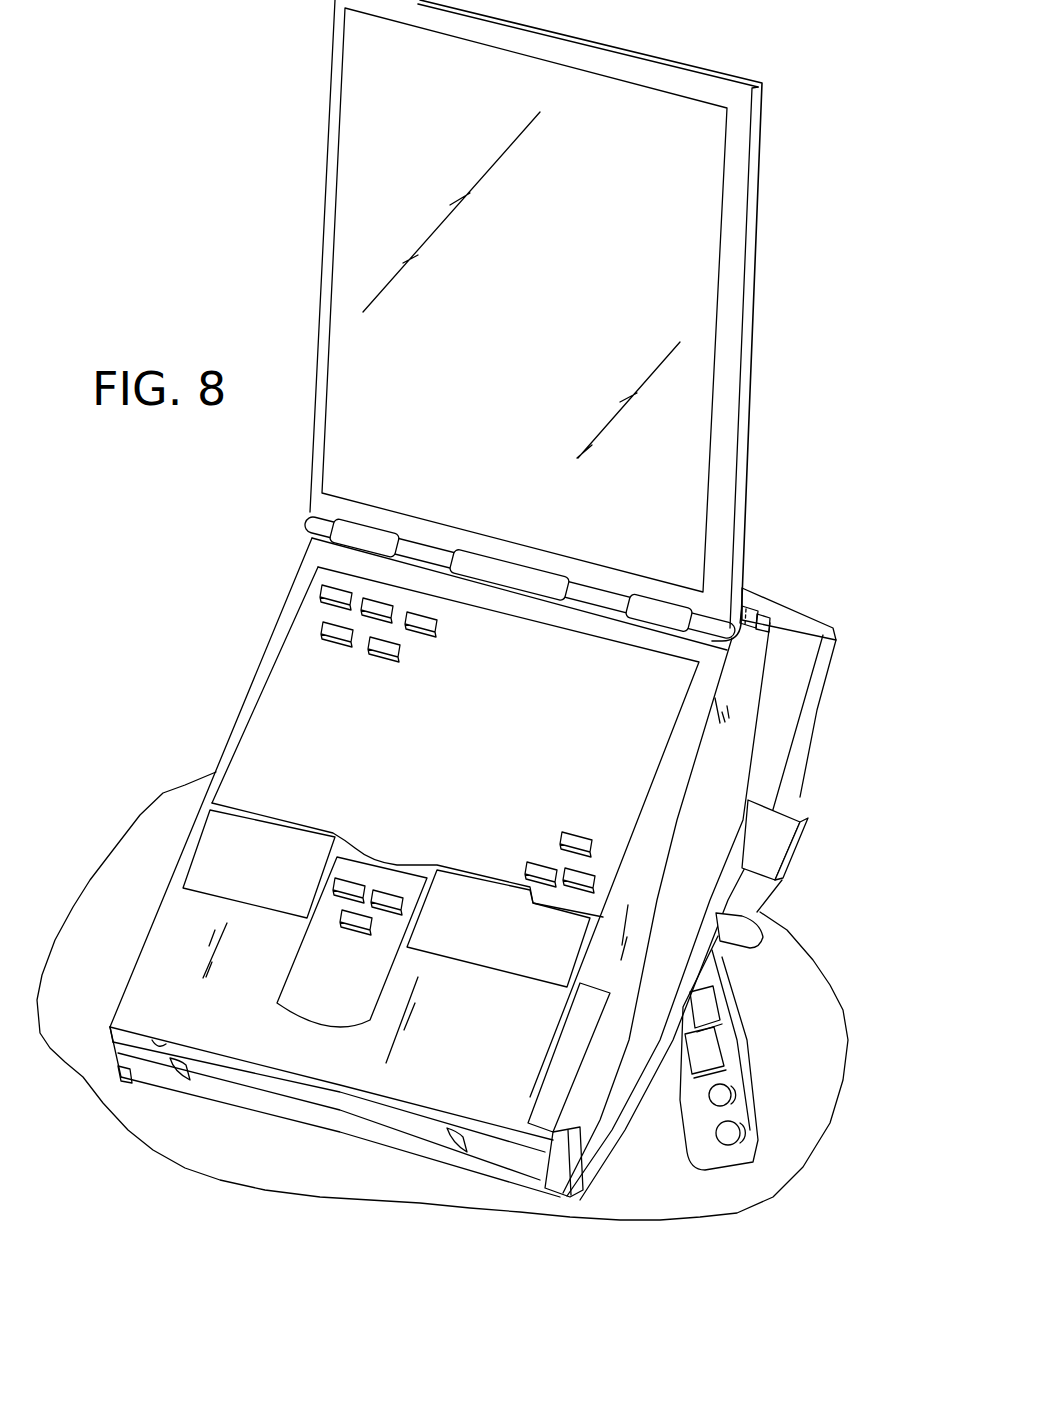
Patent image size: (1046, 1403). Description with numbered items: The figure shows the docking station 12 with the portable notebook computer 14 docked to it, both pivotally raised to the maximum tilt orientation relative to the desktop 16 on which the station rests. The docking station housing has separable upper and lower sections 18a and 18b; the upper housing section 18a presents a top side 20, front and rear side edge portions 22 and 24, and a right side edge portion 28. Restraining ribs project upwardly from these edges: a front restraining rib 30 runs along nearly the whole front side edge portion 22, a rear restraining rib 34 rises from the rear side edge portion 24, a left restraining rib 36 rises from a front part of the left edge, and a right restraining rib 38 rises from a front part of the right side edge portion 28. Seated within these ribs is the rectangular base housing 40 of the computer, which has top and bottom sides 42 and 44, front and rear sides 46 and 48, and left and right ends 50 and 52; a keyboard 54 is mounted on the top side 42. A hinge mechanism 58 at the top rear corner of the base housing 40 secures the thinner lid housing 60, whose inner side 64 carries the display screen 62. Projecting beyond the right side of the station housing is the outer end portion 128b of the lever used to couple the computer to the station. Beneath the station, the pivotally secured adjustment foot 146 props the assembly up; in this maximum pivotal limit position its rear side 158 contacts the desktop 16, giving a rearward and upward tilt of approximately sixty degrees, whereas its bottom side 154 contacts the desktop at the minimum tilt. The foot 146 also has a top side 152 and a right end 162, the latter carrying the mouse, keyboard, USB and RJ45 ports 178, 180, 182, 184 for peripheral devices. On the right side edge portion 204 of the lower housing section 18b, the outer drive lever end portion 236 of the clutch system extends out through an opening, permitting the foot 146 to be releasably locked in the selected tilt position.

The docking station 12 is at (847, 613).
The portable notebook computer 14 is at (245, 664).
The desktop 16 is at (70, 973).
The upper housing section 18a is at (317, 1143).
The lower housing section 18b is at (813, 732).
The top side 20 is at (675, 905).
The front side edge portion 22 is at (260, 1123).
The rear side edge portion 24 is at (790, 607).
The right side edge portion 28 is at (773, 782).
The front restraining rib 30 is at (393, 1133).
The rear restraining rib 34 is at (750, 610).
The left restraining rib 36 is at (118, 1065).
The right restraining rib 38 is at (562, 1197).
The base housing 40 is at (171, 920).
The top side 42 is at (427, 1072).
The bottom side 44 is at (752, 670).
The front side 46 is at (157, 1042).
The rear side 48 is at (834, 641).
The left end 50 is at (220, 752).
The right end 52 is at (683, 796).
The keyboard 54 is at (307, 612).
The hinge mechanism 58 is at (510, 568).
The lid housing 60 is at (757, 330).
The display screen 62 is at (507, 282).
The inner side 64 is at (728, 205).
The outer end portion 128b is at (755, 937).
The adjustment foot 146 is at (750, 1080).
The top side 152 is at (742, 1013).
The bottom side 154 is at (660, 1130).
The rear side 158 is at (737, 1167).
The right end 162 is at (707, 1163).
The mouse port 178 is at (705, 993).
The keyboard port 180 is at (713, 1052).
The USB port 182 is at (720, 1095).
The RJ45 port 184 is at (733, 1133).
The right side edge portion 204 is at (807, 755).
The outer drive lever end portion 236 is at (780, 853).